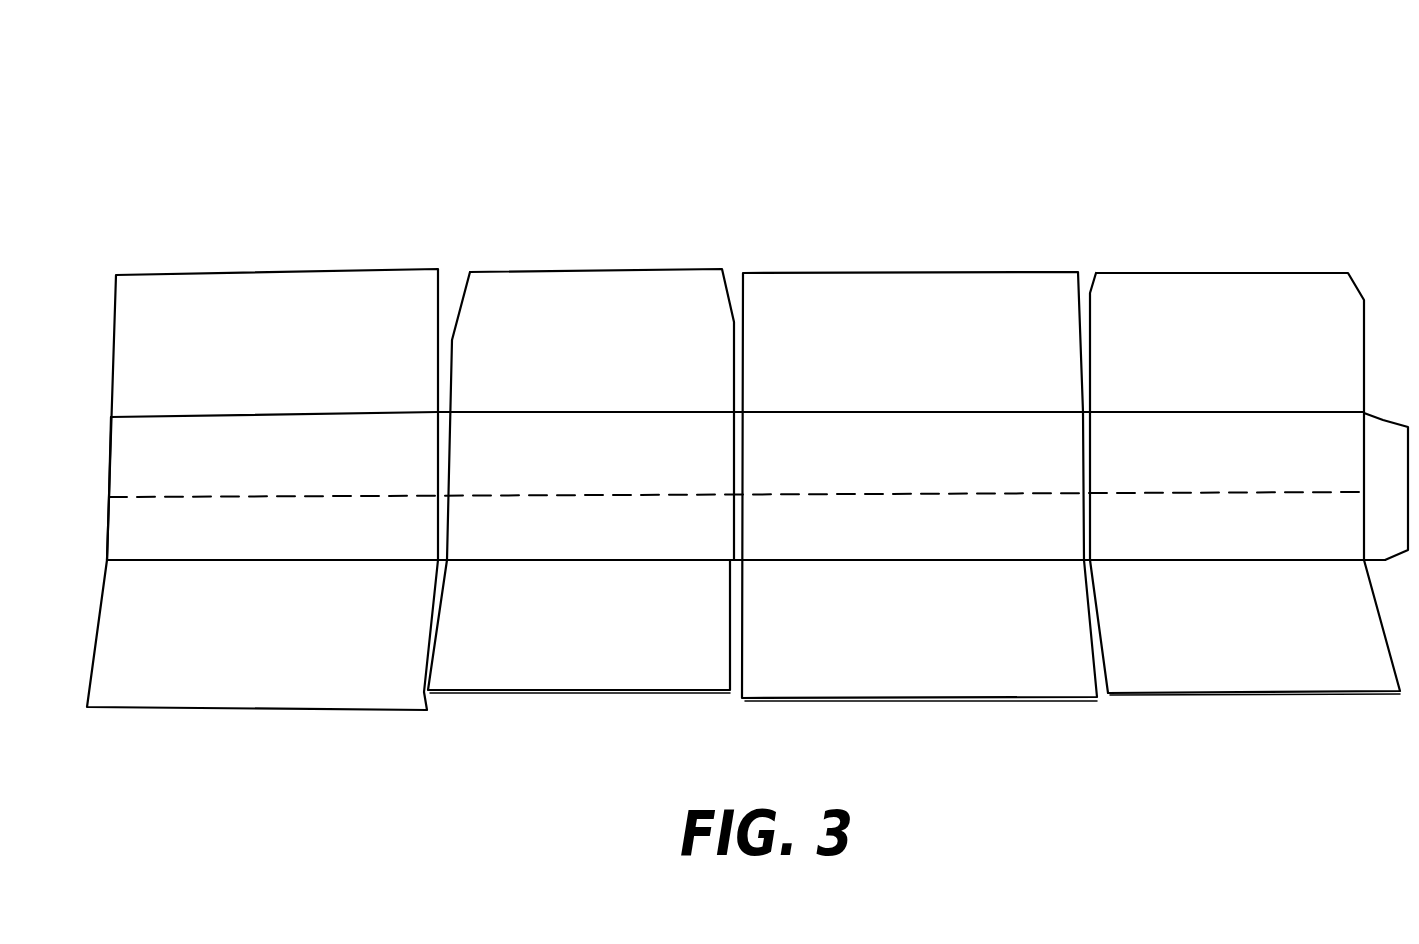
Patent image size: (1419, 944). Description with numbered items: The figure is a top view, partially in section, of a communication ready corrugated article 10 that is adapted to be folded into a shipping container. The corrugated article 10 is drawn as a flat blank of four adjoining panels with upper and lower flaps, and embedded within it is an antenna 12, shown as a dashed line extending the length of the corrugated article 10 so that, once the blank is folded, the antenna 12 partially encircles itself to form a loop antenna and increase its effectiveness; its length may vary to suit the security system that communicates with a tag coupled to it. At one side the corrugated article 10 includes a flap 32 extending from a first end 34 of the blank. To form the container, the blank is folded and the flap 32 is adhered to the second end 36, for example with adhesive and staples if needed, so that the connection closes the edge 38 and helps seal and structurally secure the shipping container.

The corrugated article 10 is at (712, 136).
The antenna 12 is at (855, 492).
The flap 32 is at (1385, 462).
The first end 34 is at (1382, 542).
The second end 36 is at (110, 452).
The edge 38 is at (107, 550).